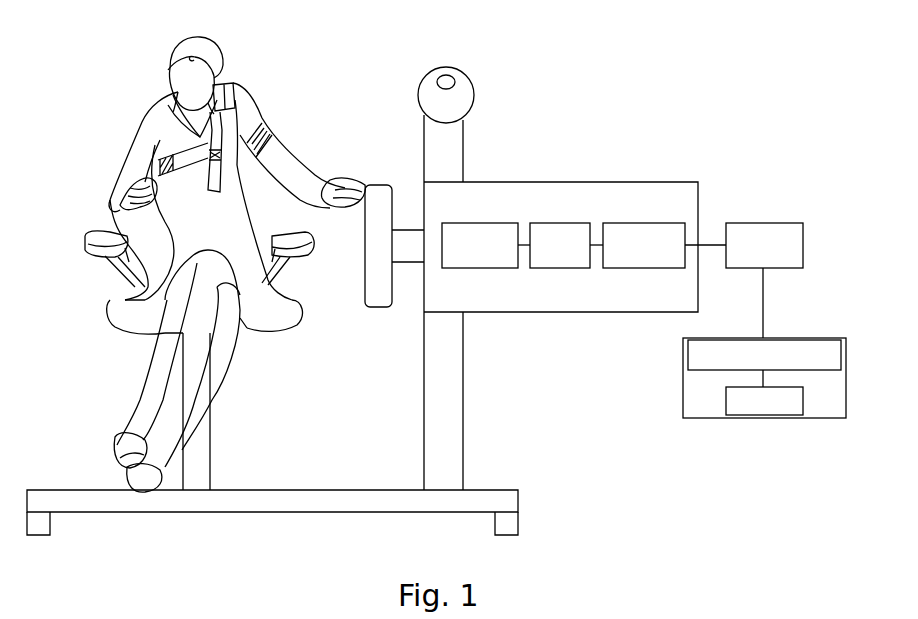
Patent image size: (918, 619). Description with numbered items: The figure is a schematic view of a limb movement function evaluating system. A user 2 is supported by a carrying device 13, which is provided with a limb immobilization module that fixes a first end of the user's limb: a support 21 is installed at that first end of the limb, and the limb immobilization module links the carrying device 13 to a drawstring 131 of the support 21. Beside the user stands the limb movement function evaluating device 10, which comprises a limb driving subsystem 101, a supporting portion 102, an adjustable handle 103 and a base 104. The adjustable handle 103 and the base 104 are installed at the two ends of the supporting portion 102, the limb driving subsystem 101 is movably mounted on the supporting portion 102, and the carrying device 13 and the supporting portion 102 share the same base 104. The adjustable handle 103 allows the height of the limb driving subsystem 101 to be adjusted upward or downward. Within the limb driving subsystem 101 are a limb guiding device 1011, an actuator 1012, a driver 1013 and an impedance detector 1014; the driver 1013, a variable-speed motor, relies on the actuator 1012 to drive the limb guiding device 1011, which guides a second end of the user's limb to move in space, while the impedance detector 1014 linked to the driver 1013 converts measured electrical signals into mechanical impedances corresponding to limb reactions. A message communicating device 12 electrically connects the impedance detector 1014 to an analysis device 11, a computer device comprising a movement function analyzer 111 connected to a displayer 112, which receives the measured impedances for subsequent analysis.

The user 2 is at (141, 124).
The limb movement function evaluating device 10 is at (517, 100).
The analysis device 11 is at (814, 420).
The message communicating device 12 is at (764, 280).
The carrying device 13 is at (86, 241).
The support 21 is at (264, 122).
The limb driving subsystem 101 is at (699, 186).
The supporting portion 102 is at (464, 426).
The adjustable handle 103 is at (440, 68).
The base 104 is at (190, 510).
The movement function analyzer 111 is at (764, 363).
The displayer 112 is at (764, 401).
The drawstring 131 is at (245, 85).
The limb guiding device 1011 is at (375, 309).
The actuator 1012 is at (486, 245).
The driver 1013 is at (566, 245).
The impedance detector 1014 is at (664, 245).